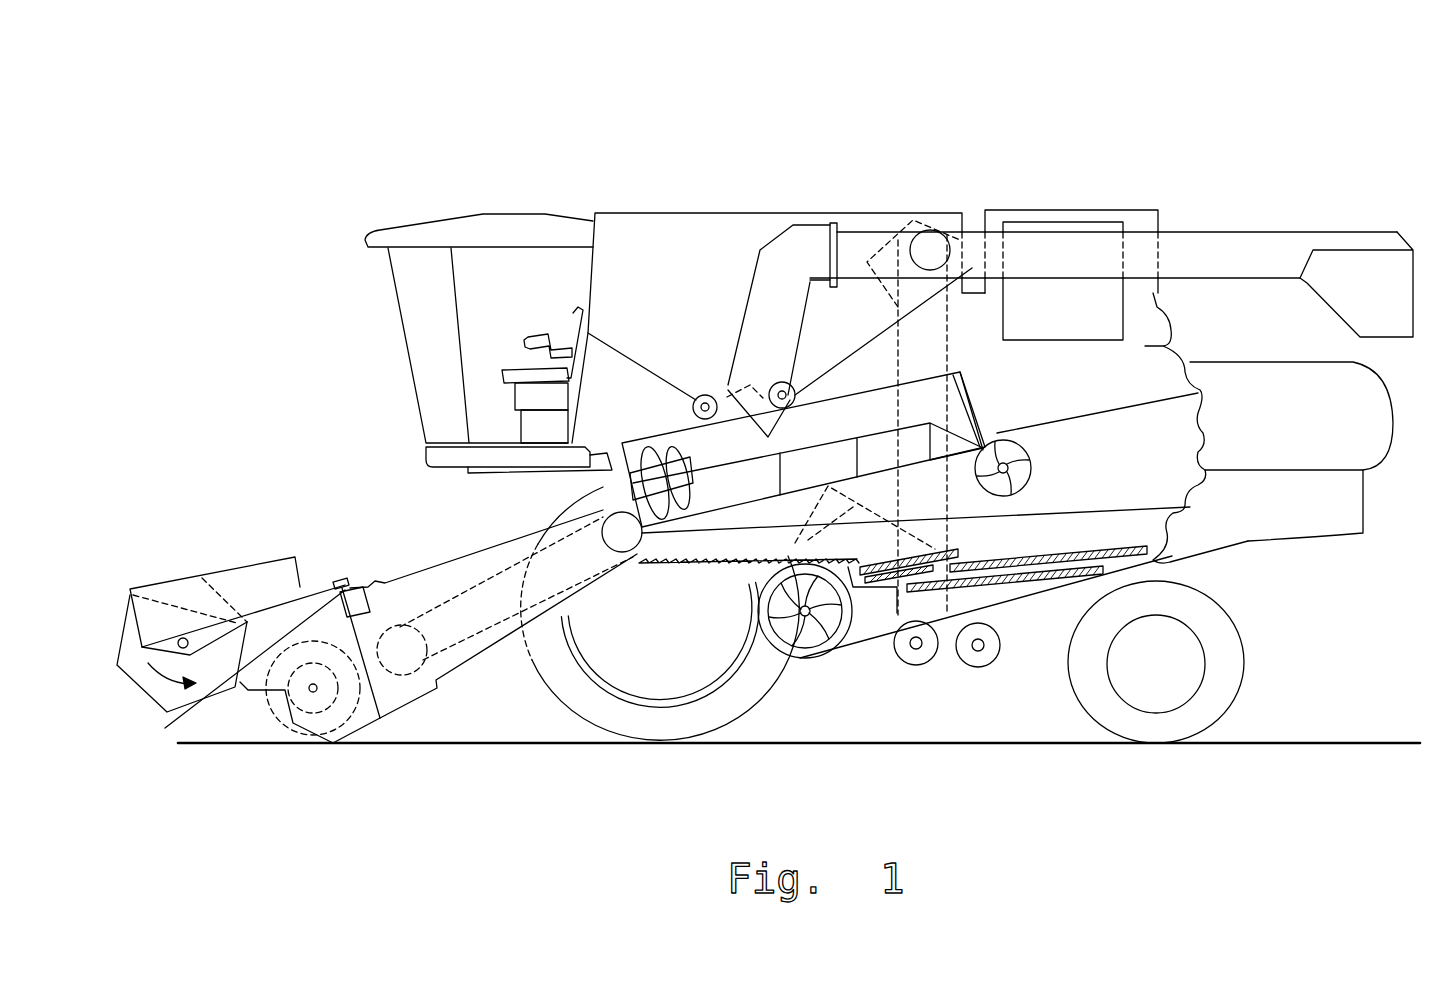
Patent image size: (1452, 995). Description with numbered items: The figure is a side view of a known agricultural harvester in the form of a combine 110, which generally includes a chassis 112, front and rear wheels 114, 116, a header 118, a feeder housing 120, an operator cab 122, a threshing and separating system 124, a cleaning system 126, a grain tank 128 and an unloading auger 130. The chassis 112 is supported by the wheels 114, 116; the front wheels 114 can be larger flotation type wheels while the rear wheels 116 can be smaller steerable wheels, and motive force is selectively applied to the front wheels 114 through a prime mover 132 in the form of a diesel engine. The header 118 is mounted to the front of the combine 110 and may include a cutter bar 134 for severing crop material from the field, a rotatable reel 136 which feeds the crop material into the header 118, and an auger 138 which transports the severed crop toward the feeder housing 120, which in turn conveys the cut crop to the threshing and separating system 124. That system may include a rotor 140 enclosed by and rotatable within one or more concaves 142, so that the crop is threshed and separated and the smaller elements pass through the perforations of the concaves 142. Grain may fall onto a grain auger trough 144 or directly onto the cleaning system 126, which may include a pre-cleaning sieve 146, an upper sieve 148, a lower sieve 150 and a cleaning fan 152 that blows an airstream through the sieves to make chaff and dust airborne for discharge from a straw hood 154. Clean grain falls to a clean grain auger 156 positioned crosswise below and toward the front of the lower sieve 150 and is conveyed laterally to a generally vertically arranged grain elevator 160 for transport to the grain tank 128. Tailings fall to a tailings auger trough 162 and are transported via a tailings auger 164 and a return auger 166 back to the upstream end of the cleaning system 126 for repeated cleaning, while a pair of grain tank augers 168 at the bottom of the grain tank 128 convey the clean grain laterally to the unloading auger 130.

The combine 110 is at (471, 197).
The chassis 112 is at (1175, 570).
The front wheels 114 is at (565, 697).
The rear wheels 116 is at (1243, 676).
The header 118 is at (222, 557).
The feeder housing 120 is at (450, 563).
The operator cab 122 is at (403, 316).
The threshing and separating system 124 is at (571, 493).
The cleaning system 126 is at (867, 672).
The grain tank 128 is at (656, 216).
The unloading auger 130 is at (1254, 243).
The prime mover 132 is at (1050, 224).
The cutter bar 134 is at (245, 745).
The reel 136 is at (125, 635).
The auger 138 is at (318, 720).
The rotor 140 is at (648, 440).
The concave 142 is at (835, 427).
The grain auger trough 144 is at (663, 575).
The pre-cleaning sieve 146 is at (957, 549).
The upper sieve 148 is at (1068, 560).
The lower sieve 150 is at (1032, 583).
The cleaning fan 152 is at (806, 640).
The straw hood 154 is at (1373, 408).
The clean grain auger 156 is at (928, 652).
The grain elevator 160 is at (950, 338).
The tailings auger trough 162 is at (1067, 597).
The tailings auger 164 is at (977, 665).
The return auger 166 is at (880, 527).
The grain tank augers 168 is at (703, 395).